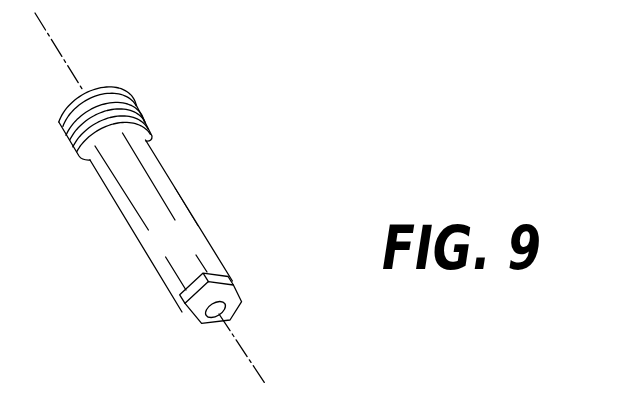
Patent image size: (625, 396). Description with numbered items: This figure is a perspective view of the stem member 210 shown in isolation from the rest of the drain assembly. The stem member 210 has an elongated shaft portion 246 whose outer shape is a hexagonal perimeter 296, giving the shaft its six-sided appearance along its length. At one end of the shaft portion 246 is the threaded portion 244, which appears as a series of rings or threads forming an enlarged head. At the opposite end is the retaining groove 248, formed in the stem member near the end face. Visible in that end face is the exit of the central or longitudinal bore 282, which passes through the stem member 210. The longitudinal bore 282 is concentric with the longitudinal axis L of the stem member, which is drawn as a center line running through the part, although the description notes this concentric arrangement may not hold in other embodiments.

The stem member 210 is at (202, 188).
The threaded portion 244 is at (123, 90).
The shaft portion 246 is at (195, 248).
The retaining groove 248 is at (244, 285).
The longitudinal bore 282 is at (218, 311).
The hexagonal perimeter 296 is at (184, 206).
The longitudinal axis L is at (262, 372).